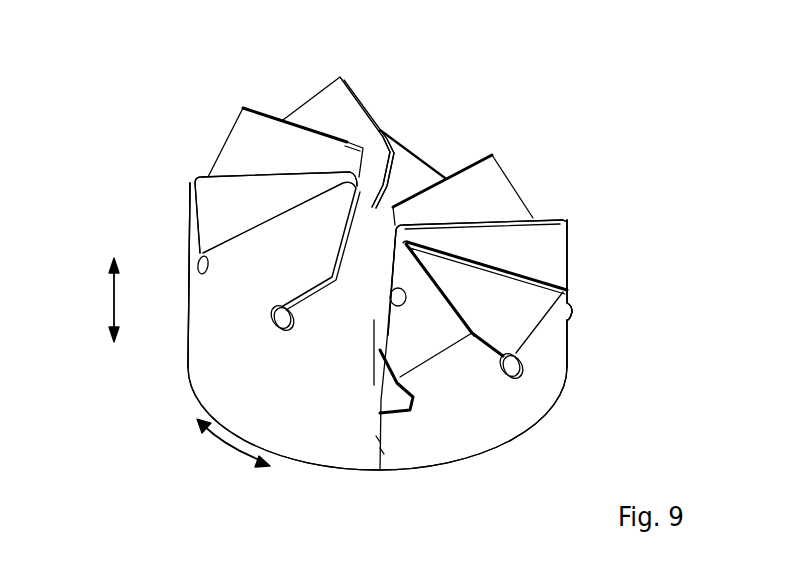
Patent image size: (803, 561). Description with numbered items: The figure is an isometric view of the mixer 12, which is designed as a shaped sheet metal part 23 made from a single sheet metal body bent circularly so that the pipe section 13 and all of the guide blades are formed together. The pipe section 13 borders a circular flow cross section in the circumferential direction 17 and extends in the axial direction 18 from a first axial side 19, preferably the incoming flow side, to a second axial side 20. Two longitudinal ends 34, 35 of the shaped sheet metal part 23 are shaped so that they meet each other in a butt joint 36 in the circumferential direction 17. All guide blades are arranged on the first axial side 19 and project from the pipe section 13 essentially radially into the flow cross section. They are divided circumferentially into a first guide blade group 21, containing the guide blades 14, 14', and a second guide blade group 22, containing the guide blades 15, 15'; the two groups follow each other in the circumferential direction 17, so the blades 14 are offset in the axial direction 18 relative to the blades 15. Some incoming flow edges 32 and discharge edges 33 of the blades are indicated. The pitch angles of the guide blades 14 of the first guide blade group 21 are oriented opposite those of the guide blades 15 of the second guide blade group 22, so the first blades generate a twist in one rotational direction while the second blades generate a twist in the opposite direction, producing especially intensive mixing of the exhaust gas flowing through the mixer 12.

The mixer 12 is at (608, 160).
The pipe section 13 is at (217, 350).
The guide blade 14 is at (473, 243).
The first blade element (second part) 14' is at (473, 284).
The guide blade 15 is at (283, 209).
The second blade element (second part) 15' is at (294, 176).
The circumferential direction 17 is at (227, 453).
The axial direction 18 is at (112, 298).
The first axial side 19 is at (373, 115).
The second axial side 20 is at (317, 470).
The first guide blade group 21 is at (600, 232).
The second guide blade group 22 is at (165, 156).
The shaped sheet metal part 23 is at (580, 362).
The incoming flow edge 32 is at (272, 110).
The discharge edge 33 is at (392, 304).
The longitudinal end 34 is at (378, 440).
The longitudinal end 35 is at (383, 450).
The butt joint 36 is at (378, 470).